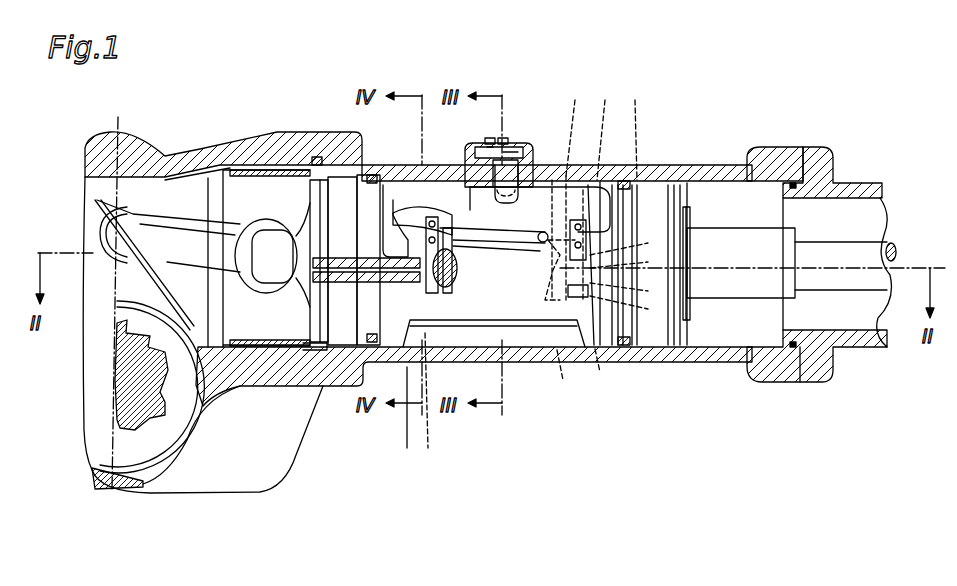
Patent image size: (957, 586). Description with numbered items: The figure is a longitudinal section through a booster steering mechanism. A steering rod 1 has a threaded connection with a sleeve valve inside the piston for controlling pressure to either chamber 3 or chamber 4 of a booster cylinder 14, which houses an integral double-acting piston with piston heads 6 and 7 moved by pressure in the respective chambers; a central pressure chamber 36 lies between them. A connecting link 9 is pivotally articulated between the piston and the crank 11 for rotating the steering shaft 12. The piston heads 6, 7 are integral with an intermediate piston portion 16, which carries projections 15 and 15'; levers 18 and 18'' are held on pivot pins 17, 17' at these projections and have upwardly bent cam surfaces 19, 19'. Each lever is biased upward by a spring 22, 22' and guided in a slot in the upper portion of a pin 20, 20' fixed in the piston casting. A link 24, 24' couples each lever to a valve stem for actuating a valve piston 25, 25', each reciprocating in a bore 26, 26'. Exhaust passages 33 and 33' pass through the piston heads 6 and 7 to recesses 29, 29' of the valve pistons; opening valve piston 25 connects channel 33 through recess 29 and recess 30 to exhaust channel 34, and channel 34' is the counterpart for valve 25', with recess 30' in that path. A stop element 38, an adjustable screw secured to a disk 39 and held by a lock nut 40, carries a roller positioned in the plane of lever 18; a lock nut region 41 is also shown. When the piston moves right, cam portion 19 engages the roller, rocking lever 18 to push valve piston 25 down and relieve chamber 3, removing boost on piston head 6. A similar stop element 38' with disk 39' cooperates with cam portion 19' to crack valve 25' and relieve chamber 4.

The steering rod 1 is at (858, 257).
The chamber 3 is at (291, 198).
The chamber 4 is at (735, 197).
The piston head 6 is at (345, 190).
The piston head 7 is at (655, 193).
The connecting link 9 is at (200, 243).
The crank 11 is at (150, 292).
The steering shaft 12 is at (133, 400).
The booster cylinder 14 is at (610, 175).
The projection 15 is at (500, 255).
The projection 15' is at (537, 270).
The intermediate piston portion 16 is at (633, 349).
The pivot pin 17 is at (620, 236).
The pivot pin 17' is at (450, 206).
The lever 18 is at (540, 210).
The chamber wall 18'' is at (561, 155).
The cam surface 19 is at (422, 178).
The cam surface 19' is at (607, 133).
The pin 20 is at (462, 275).
The pin 20' is at (565, 372).
The spring 22 is at (516, 238).
The spring 22' is at (575, 131).
The link 24 is at (394, 187).
The link 24' is at (640, 133).
The valve piston 25 is at (436, 270).
The valve piston 25' is at (599, 372).
The bore 26 is at (477, 339).
The bore 26' is at (632, 243).
The recess 29 is at (458, 274).
The recess 29' is at (632, 260).
The recess 30 is at (401, 420).
The second pin 30' is at (632, 291).
The exhaust passage 33 is at (366, 344).
The exhaust passage 33' is at (739, 263).
The exhaust channel 34 is at (432, 403).
The exhaust channel 34' is at (632, 308).
The central pressure chamber 36 is at (587, 182).
The stop element 38 is at (518, 122).
The stop element 38' is at (489, 128).
The disk 39 is at (521, 112).
The disk 39' is at (486, 203).
The lock nut 40 is at (520, 180).
The valve screw 41 is at (503, 147).